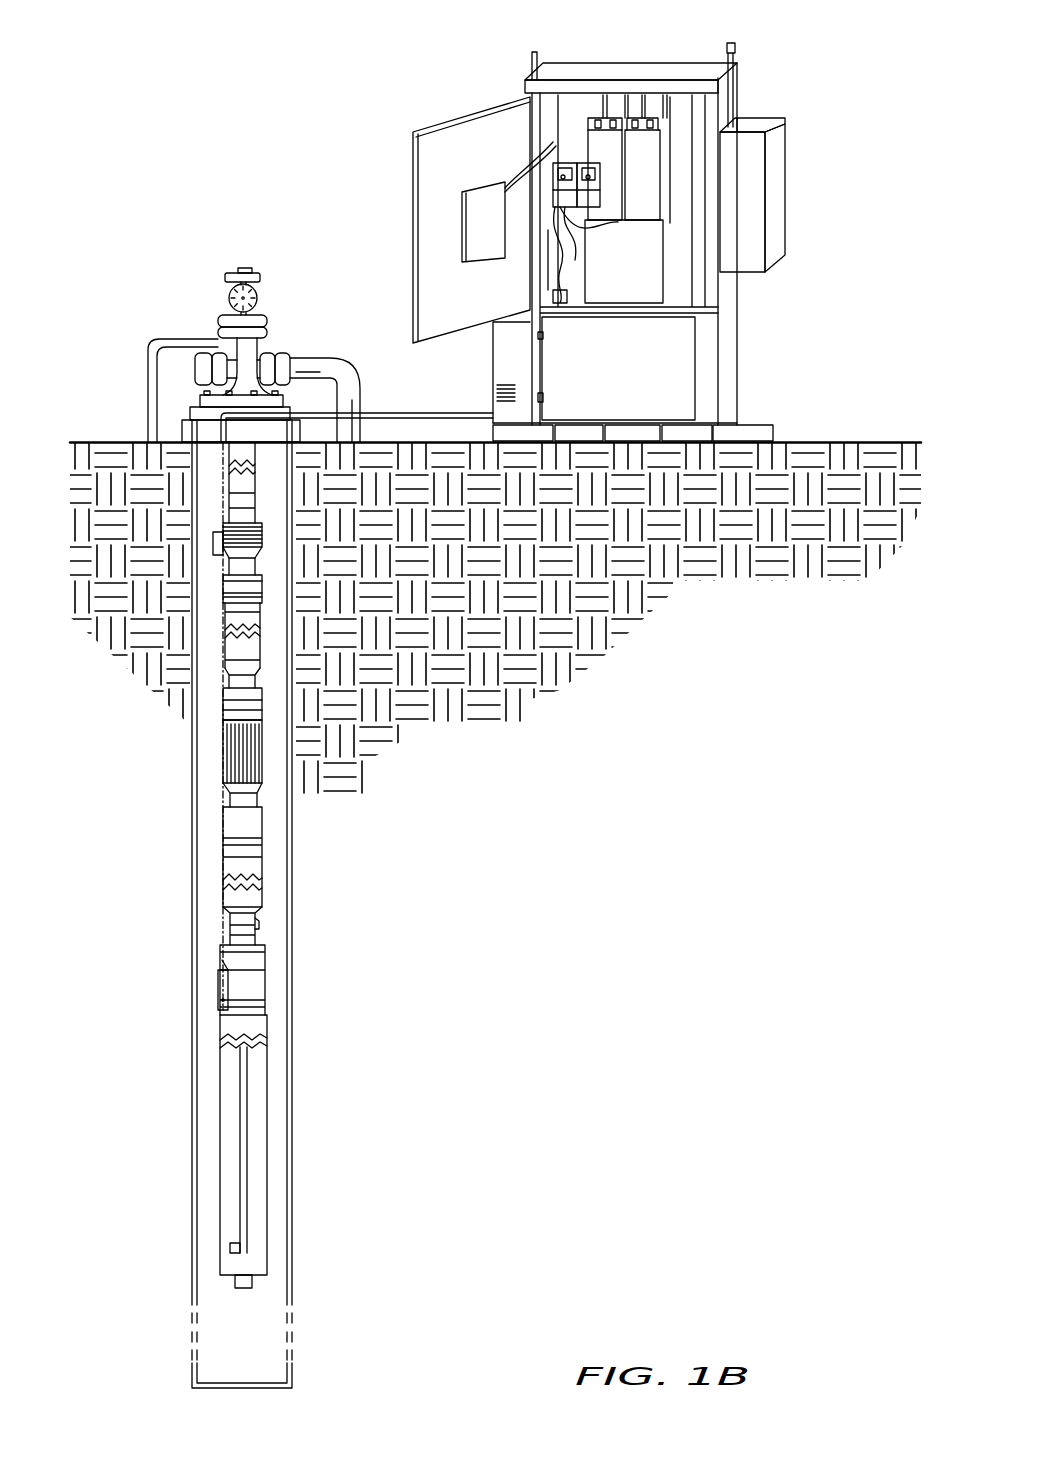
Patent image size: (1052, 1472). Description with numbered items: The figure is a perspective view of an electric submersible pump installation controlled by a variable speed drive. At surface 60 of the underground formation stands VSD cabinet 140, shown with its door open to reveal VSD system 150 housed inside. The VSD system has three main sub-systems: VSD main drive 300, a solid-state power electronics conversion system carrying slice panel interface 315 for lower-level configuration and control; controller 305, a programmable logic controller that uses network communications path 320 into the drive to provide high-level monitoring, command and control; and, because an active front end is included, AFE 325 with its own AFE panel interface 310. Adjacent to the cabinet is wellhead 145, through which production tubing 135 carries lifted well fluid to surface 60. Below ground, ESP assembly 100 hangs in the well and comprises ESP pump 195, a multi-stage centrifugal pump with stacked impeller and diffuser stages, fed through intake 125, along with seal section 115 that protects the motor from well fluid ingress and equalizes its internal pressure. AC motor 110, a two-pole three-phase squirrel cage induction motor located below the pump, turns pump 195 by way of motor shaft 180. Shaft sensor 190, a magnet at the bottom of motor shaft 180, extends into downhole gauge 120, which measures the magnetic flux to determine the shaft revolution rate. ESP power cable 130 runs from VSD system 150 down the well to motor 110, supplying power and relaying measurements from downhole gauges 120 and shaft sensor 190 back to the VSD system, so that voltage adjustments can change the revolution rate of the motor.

The surface 60 is at (105, 440).
The ESP assembly 100 is at (190, 867).
The AC motor 110 is at (267, 1185).
The seal section 115 is at (247, 825).
The downhole gauges 120 is at (235, 1263).
The intake 125 is at (240, 756).
The ESP power cable 130 is at (400, 405).
The production tubing 135 is at (240, 494).
The VSD cabinet 140 is at (604, 227).
The wellhead 145 is at (238, 356).
The VSD system 150 is at (667, 280).
The motor shaft 180 is at (240, 1130).
The shaft sensor 190 is at (230, 1250).
The ESP pump 195 is at (237, 648).
The VSD main drive 300 is at (620, 159).
The controller 305 is at (501, 226).
The AFE panel interface 310 is at (592, 190).
The slice panel interface 315 is at (567, 163).
The network communications path 320 is at (523, 168).
The AFE 325 is at (657, 159).